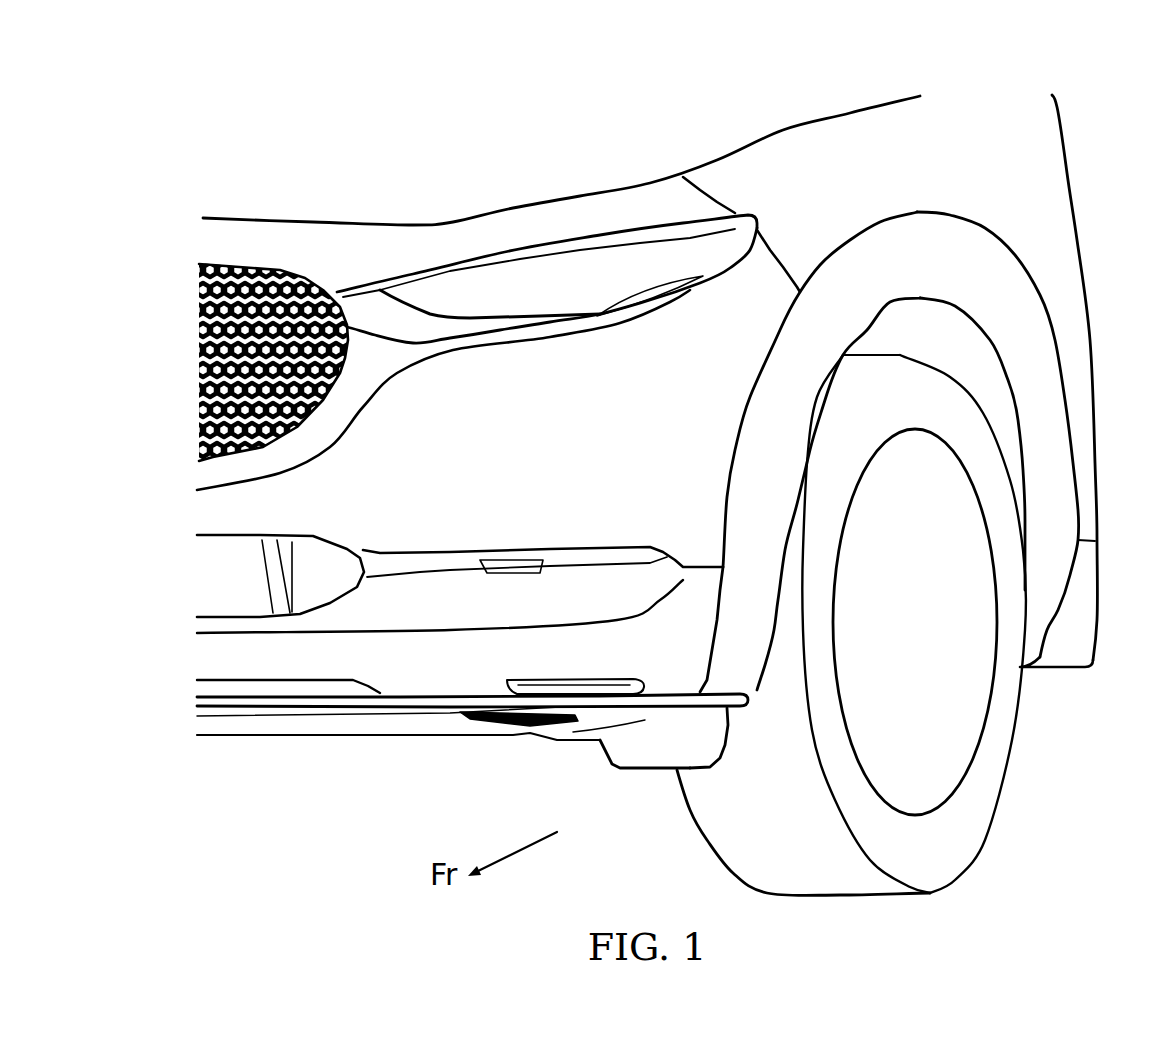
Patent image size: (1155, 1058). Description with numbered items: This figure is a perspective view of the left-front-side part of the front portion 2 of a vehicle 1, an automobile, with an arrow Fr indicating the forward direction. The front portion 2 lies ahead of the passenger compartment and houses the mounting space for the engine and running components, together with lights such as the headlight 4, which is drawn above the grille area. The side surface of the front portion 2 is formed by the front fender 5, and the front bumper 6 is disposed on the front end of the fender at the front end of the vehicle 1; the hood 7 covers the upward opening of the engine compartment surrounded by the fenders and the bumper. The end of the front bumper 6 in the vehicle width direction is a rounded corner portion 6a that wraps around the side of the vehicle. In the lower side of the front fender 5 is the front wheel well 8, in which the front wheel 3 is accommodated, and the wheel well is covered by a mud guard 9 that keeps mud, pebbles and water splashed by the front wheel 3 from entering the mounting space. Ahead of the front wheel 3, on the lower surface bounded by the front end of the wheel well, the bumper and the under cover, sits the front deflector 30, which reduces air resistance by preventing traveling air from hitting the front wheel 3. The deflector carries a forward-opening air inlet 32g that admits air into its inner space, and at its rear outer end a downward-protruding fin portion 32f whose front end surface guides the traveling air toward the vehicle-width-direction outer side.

The vehicle 1 is at (235, 168).
The front portion 2 is at (985, 112).
The front wheel 3 is at (987, 787).
The headlight 4 is at (613, 257).
The front fender 5 is at (1048, 157).
The front bumper 6 is at (417, 667).
The corner portion 6a is at (697, 640).
The hood 7 is at (697, 143).
The front wheel well 8 is at (988, 386).
The mud guard 9 is at (1037, 607).
The front deflector 30 is at (633, 774).
The fin portion 32f is at (673, 747).
The air inlet 32g is at (533, 720).